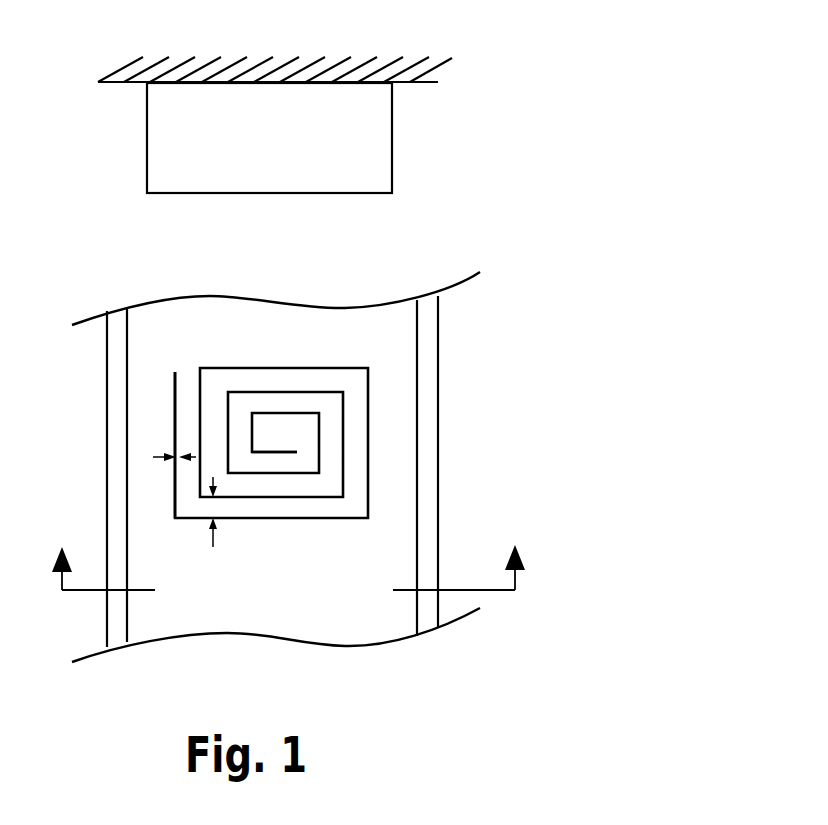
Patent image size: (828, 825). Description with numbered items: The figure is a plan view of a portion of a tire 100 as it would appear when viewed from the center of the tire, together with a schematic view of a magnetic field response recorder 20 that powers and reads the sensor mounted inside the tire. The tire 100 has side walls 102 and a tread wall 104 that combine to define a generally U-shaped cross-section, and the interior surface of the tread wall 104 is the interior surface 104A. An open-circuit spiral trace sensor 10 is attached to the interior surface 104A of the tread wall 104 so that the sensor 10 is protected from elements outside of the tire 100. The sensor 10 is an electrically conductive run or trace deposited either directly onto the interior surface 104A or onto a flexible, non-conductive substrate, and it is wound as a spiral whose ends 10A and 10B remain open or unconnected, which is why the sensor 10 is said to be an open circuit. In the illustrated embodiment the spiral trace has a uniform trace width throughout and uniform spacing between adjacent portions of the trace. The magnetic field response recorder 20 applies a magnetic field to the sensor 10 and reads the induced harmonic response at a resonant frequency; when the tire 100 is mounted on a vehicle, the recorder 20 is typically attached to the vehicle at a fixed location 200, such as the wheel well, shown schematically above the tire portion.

The fixed location 200 is at (275, 45).
The magnetic field response recorder 20 is at (315, 138).
The tire 100 is at (333, 482).
The tread wall 104 is at (276, 485).
The interior surface 104A is at (275, 517).
The side walls 102 is at (319, 471).
The open-circuit spiral trace sensor 10 is at (330, 526).
The end of spiral trace 10A is at (113, 389).
The end of spiral trace 10B is at (218, 356).